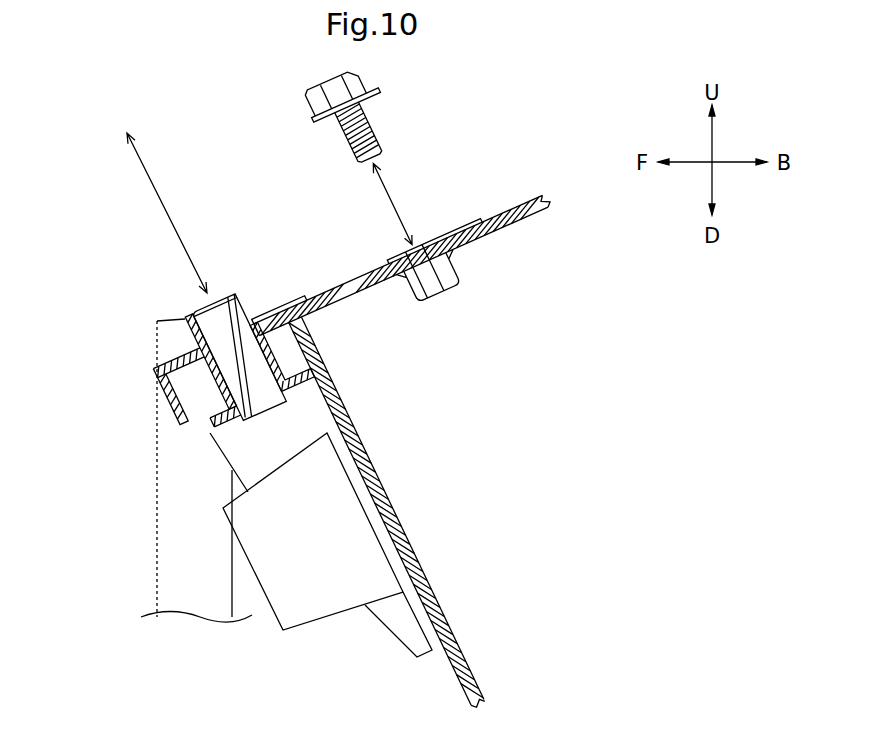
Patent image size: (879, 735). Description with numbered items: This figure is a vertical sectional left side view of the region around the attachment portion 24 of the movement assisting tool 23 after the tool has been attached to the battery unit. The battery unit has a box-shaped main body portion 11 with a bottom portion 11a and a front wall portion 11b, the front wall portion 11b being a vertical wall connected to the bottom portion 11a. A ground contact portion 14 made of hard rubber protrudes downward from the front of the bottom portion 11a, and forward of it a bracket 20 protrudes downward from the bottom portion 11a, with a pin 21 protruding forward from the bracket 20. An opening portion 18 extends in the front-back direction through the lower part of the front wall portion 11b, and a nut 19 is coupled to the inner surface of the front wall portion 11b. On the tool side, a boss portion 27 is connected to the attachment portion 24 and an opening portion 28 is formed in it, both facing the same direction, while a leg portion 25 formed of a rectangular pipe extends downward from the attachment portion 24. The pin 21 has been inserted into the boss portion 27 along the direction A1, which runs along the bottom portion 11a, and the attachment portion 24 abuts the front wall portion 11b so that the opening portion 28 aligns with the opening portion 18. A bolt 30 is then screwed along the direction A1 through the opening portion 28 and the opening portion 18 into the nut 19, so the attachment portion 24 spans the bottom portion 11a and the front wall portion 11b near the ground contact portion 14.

The main body portion 11 is at (403, 413).
The bottom portion 11a is at (403, 546).
The front wall portion 11b is at (517, 206).
The ground contact portion 14 is at (283, 552).
The opening portion 18 is at (458, 281).
The nut 19 is at (431, 288).
The bracket 20 is at (252, 441).
The pin 21 is at (233, 318).
The movement assisting tool 23 is at (144, 352).
The attachment portion 24 is at (323, 298).
The leg portion 25 is at (157, 468).
The boss portion 27 is at (186, 308).
The opening portion 28 is at (426, 250).
The bolt 30 is at (313, 98).
The direction A1 is at (394, 207).